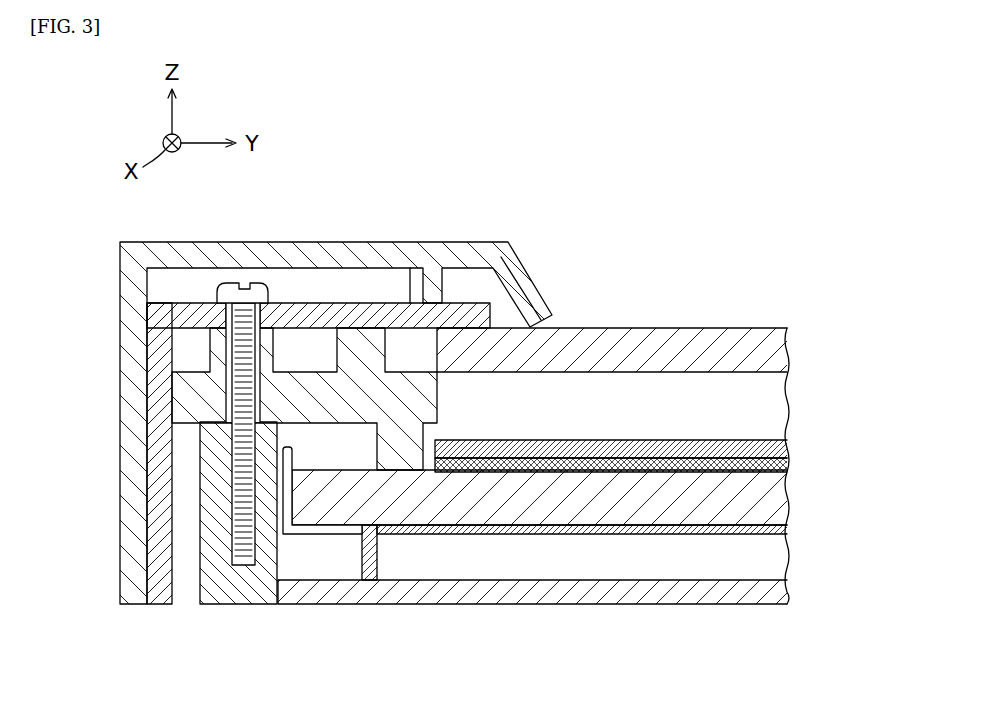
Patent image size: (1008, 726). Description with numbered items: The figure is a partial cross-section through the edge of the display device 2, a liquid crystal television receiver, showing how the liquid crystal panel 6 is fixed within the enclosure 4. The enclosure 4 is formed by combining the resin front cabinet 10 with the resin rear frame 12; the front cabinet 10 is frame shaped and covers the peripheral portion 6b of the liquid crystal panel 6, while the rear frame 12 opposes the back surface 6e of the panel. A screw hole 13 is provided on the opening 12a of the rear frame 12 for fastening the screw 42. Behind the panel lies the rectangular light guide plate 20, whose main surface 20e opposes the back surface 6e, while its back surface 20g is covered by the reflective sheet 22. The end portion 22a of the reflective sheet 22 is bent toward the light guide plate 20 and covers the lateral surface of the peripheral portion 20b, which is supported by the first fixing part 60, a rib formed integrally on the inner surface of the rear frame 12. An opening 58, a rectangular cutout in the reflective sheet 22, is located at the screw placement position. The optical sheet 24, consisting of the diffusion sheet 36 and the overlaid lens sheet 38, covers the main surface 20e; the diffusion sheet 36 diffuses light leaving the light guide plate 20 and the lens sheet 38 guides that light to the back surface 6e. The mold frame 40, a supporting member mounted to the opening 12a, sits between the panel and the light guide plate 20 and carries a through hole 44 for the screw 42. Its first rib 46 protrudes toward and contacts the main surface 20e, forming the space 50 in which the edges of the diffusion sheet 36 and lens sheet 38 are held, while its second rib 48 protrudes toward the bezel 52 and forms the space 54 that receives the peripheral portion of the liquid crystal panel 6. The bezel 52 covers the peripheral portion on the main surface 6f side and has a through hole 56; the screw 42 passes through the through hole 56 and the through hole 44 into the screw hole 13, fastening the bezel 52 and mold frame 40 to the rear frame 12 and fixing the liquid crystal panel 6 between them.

The display device 2 is at (606, 164).
The enclosure 4 is at (66, 610).
The front cabinet 10 is at (127, 572).
The rear frame 12 is at (212, 593).
The opening 12a is at (200, 448).
The screw hole 13 is at (243, 566).
The bezel 52 is at (147, 363).
The through hole 44 is at (232, 393).
The through hole 56 is at (222, 300).
The screw 42 is at (241, 283).
The mold frame 40 is at (297, 388).
The second rib 48 is at (363, 345).
The first rib 46 is at (400, 440).
The space 54 is at (428, 345).
The space 50 is at (506, 262).
The liquid crystal panel 6 is at (693, 352).
The peripheral portion 6b is at (580, 348).
The main surface 6f is at (757, 330).
The back surface 6e is at (757, 374).
The optical sheet 24 is at (860, 400).
The lens sheet 38 is at (757, 441).
The diffusion sheet 36 is at (760, 464).
The light guide plate 20 is at (757, 497).
The main surface 20e is at (621, 470).
The reflective sheet 22 is at (752, 535).
The end portion 22a is at (291, 498).
The peripheral portion 20b is at (327, 502).
The first fixing part 60 is at (350, 503).
The opening 58 is at (412, 532).
The back surface 20g is at (575, 582).